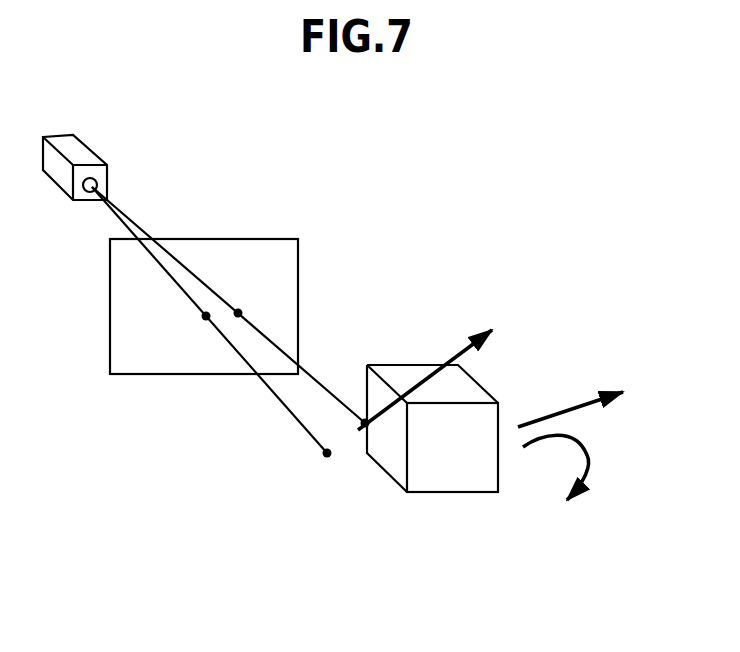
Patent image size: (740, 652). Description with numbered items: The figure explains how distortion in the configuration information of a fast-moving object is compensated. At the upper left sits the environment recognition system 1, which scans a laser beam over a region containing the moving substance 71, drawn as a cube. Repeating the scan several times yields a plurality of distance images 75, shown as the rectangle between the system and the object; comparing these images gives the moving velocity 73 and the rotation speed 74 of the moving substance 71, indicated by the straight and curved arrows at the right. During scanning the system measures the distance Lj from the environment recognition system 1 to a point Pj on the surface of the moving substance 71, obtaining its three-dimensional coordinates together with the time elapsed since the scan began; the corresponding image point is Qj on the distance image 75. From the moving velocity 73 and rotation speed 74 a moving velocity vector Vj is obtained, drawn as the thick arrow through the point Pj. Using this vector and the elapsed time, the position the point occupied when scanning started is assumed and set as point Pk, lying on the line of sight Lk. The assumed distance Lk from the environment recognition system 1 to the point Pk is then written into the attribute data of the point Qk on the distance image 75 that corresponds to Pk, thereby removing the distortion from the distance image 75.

The environment recognition system 1 is at (96, 149).
The distance image 75 is at (226, 239).
The moving substance 71 is at (462, 478).
The moving velocity 73 is at (563, 412).
The rotation speed 74 is at (586, 440).
The point Qj is at (240, 309).
The point Qk is at (206, 320).
The distance Lj is at (307, 372).
The assumed distance Lk is at (273, 394).
The point Pj is at (365, 428).
The point Pk is at (327, 455).
The moving velocity vector Vj is at (462, 348).